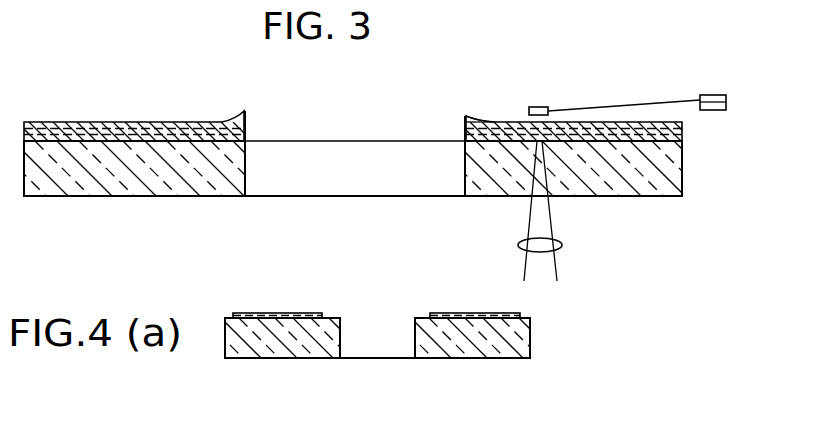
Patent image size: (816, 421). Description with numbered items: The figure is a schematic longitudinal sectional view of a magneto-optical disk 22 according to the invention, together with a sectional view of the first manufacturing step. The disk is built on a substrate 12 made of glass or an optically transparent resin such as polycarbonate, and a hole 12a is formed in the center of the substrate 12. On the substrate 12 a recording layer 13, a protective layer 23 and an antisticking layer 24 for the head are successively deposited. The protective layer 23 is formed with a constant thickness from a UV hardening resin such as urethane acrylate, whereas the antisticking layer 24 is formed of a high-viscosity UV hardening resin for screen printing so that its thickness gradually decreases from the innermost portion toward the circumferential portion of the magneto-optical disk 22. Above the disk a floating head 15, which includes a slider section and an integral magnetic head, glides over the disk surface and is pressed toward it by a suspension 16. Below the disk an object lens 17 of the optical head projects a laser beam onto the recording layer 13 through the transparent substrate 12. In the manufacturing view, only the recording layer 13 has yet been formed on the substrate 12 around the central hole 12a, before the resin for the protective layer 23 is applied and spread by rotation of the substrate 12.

In FIG. 3, the substrate 12 is at (684, 171).
The substrate 12 is at (530, 348).
In FIG. 3, the hole 12a is at (463, 163).
The hole 12a is at (413, 337).
In FIG. 3, the recording layer 13 is at (664, 145).
The recording layer 13 is at (505, 312).
In FIG. 3, the floating head 15 is at (536, 107).
In FIG. 3, the suspension 16 is at (618, 103).
In FIG. 3, the object lens 17 is at (565, 244).
In FIG. 3, the magneto-optical disk 22 is at (211, 200).
In FIG. 3, the protective layer 23 is at (465, 135).
In FIG. 3, the antisticking layer for head 24 is at (466, 124).